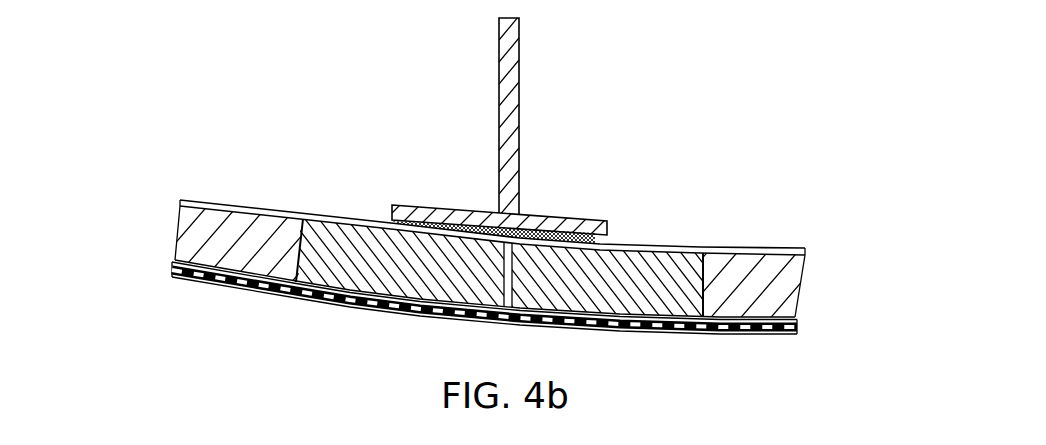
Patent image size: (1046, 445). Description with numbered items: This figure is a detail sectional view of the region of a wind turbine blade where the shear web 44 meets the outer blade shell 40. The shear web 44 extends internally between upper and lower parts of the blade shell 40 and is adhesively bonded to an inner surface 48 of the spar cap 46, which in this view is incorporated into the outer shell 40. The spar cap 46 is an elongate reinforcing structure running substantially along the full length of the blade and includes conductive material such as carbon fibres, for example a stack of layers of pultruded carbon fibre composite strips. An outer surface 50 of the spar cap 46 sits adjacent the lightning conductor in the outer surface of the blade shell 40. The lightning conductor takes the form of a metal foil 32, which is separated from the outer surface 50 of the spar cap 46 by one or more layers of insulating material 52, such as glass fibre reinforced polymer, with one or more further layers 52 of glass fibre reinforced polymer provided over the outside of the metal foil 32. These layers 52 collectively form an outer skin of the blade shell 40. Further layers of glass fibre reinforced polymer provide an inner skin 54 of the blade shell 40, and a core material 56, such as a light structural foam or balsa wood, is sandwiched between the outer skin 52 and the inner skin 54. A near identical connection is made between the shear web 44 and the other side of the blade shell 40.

The metal foil 32 is at (382, 312).
The outer blade shell 40 is at (200, 193).
The shear web 44 is at (520, 26).
The spar cap 46 is at (652, 270).
The inner surface of the spar cap 48 is at (595, 240).
The outer surface of the spar cap 50 is at (353, 284).
The layers of insulating material 52 is at (812, 319).
The inner skin 54 is at (789, 234).
The core material 56 is at (203, 243).